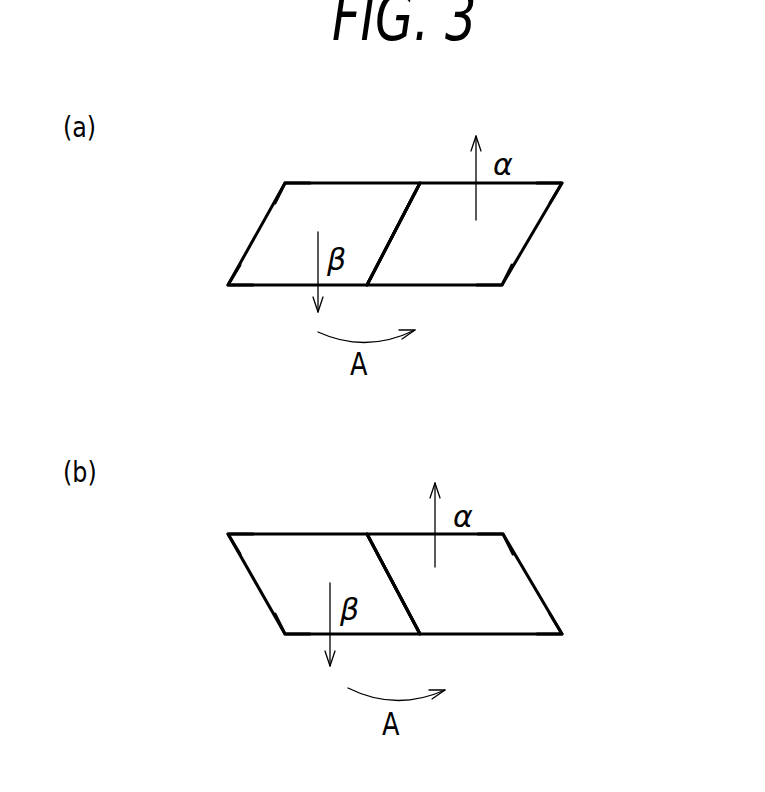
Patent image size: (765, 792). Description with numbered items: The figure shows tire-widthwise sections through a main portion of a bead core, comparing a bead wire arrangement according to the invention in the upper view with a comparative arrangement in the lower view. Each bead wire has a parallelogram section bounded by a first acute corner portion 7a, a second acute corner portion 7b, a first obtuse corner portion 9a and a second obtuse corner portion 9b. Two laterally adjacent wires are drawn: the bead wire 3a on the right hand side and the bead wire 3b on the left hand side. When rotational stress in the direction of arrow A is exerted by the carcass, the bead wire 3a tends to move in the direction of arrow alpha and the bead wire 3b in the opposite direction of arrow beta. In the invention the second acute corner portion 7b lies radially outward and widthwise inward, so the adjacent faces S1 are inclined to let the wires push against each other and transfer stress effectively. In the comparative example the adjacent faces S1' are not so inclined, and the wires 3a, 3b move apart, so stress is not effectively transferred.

The bead wire on the right hand side 3a is at (464, 272).
The bead wire on the left hand side 3b is at (279, 269).
The first acute corner portion 7a is at (228, 285).
The second acute corner portion 7b is at (562, 183).
The first obtuse corner portion 9a is at (285, 183).
The second obtuse corner portion 9b is at (502, 285).
The adjacent faces S1 is at (396, 190).
The adjacent faces S1' is at (393, 542).